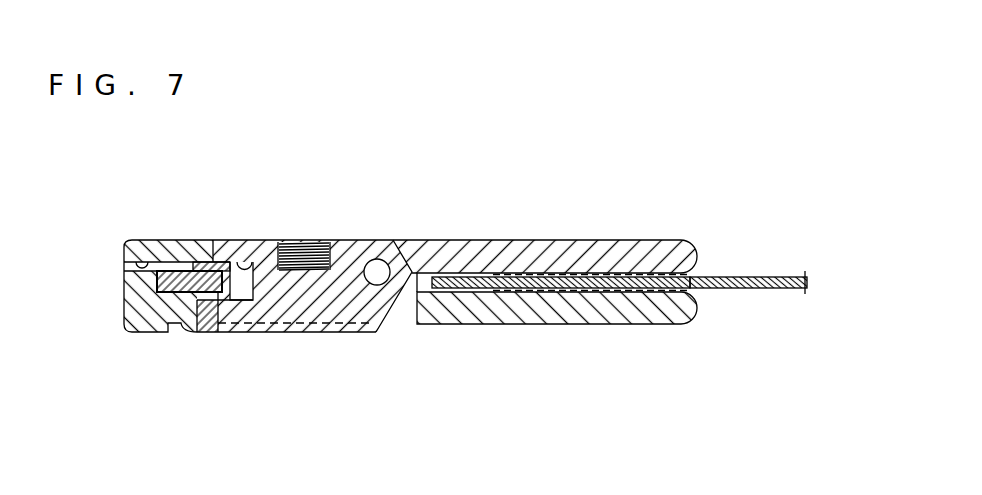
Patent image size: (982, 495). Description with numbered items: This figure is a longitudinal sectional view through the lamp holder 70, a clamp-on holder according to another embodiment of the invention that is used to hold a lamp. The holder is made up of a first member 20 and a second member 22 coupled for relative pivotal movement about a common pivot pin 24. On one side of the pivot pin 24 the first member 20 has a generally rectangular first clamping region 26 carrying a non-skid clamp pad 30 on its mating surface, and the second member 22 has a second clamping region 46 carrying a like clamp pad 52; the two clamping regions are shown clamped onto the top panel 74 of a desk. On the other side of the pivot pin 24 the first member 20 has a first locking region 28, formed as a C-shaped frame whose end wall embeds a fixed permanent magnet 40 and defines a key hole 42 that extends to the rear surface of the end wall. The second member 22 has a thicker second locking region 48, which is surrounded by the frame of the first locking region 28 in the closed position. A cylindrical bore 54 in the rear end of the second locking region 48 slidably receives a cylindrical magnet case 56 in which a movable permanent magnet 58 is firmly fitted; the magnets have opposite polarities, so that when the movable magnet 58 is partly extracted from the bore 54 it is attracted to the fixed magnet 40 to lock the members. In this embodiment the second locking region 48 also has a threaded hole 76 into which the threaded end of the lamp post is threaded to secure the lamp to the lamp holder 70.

The lamp holder 70 is at (478, 343).
The key hole 42 is at (134, 239).
The second locking region 48 is at (315, 313).
The first locking region 28 is at (193, 240).
The cylindrical bore 54 is at (258, 243).
The fixed permanent magnet 40 is at (185, 280).
The magnet case 56 is at (235, 300).
The movable permanent magnet 58 is at (198, 333).
The threaded hole 76 is at (315, 240).
The pivot pin 24 is at (378, 280).
The second clamping region 46 is at (583, 250).
The second member 22 is at (668, 245).
The first member 20 is at (665, 308).
The clamp pad 52 is at (517, 276).
The top panel 74 is at (748, 277).
The first clamping region 26 is at (583, 304).
The clamp pad 30 is at (536, 290).